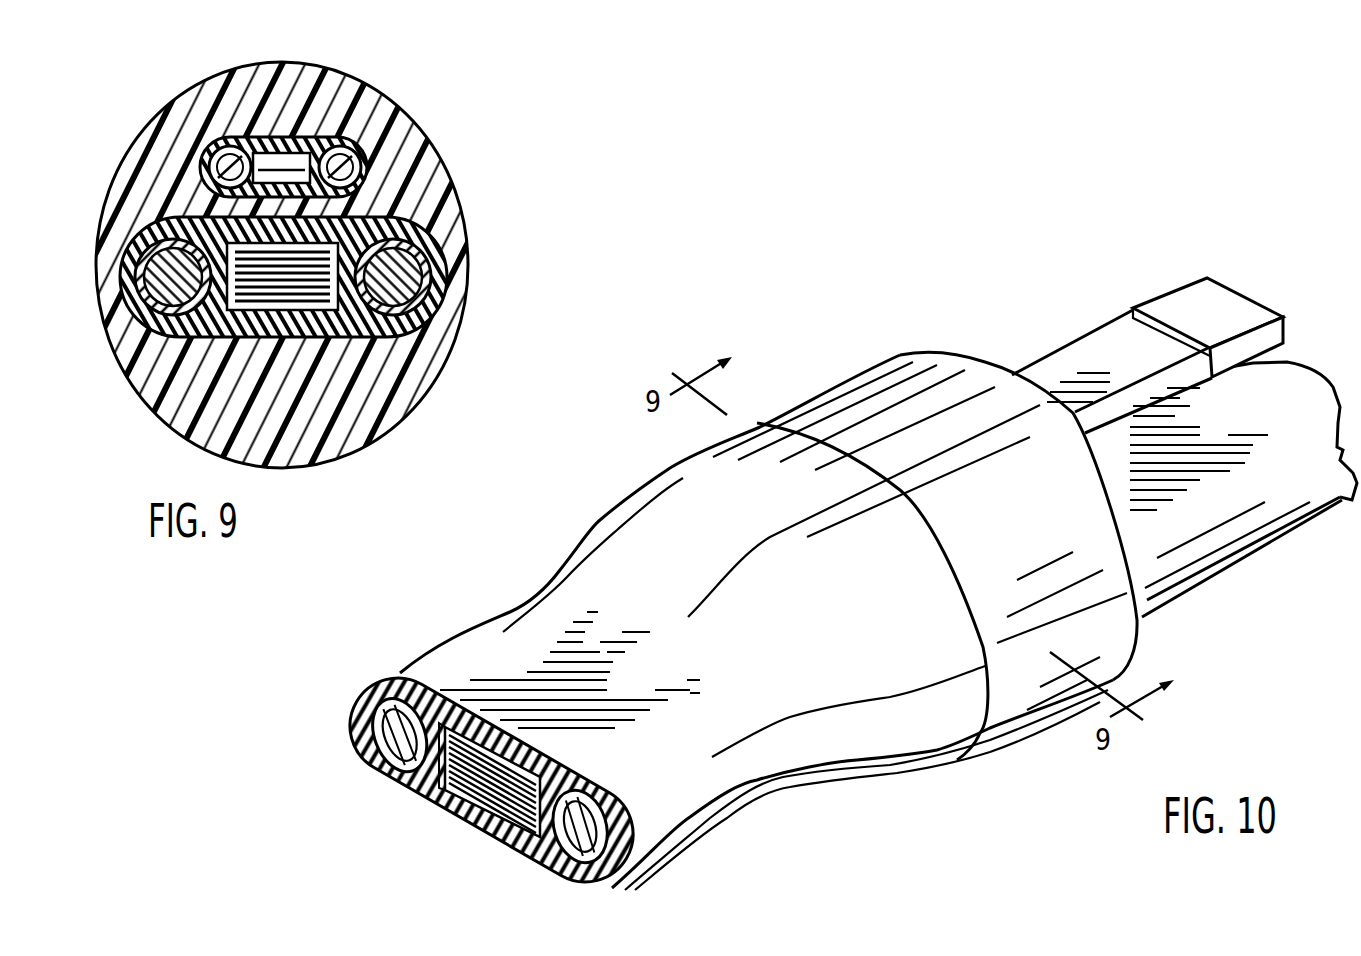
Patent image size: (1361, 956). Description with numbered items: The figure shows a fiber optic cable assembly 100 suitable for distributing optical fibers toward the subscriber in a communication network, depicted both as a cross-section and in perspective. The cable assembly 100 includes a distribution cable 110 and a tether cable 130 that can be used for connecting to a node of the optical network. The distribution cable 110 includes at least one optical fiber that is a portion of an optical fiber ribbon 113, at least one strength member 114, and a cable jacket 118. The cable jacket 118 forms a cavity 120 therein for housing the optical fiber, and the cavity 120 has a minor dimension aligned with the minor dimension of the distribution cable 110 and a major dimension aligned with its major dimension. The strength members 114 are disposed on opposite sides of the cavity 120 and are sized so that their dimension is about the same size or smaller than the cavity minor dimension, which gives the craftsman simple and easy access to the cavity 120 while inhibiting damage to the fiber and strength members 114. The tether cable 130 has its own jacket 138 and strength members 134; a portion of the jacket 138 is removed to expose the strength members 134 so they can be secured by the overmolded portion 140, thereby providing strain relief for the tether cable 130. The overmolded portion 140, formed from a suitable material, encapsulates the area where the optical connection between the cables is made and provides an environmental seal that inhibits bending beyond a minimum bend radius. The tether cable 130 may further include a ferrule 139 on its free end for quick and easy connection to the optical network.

In FIG. 9, the cable assembly 100 is at (115, 108).
In FIG. 10, the cable assembly 100 is at (586, 501).
In FIG. 9, the distribution cable 110 is at (448, 236).
In FIG. 10, the distribution cable 110 is at (428, 669).
In FIG. 9, the optical fiber ribbon 113 is at (235, 312).
In FIG. 10, the optical fiber ribbon 113 is at (460, 790).
In FIG. 9, the strength member 114 is at (172, 282).
In FIG. 10, the strength member 114 is at (490, 780).
In FIG. 9, the cable jacket 118 is at (140, 235).
In FIG. 9, the cavity 120 is at (408, 263).
In FIG. 9, the tether cable 130 is at (366, 133).
In FIG. 10, the tether cable 130 is at (1055, 378).
In FIG. 9, the strength members 134 is at (208, 153).
In FIG. 9, the jacket 138 is at (240, 148).
In FIG. 10, the ferrule 139 is at (1188, 303).
In FIG. 9, the overmolded portion 140 is at (392, 362).
In FIG. 10, the overmolded portion 140 is at (945, 725).